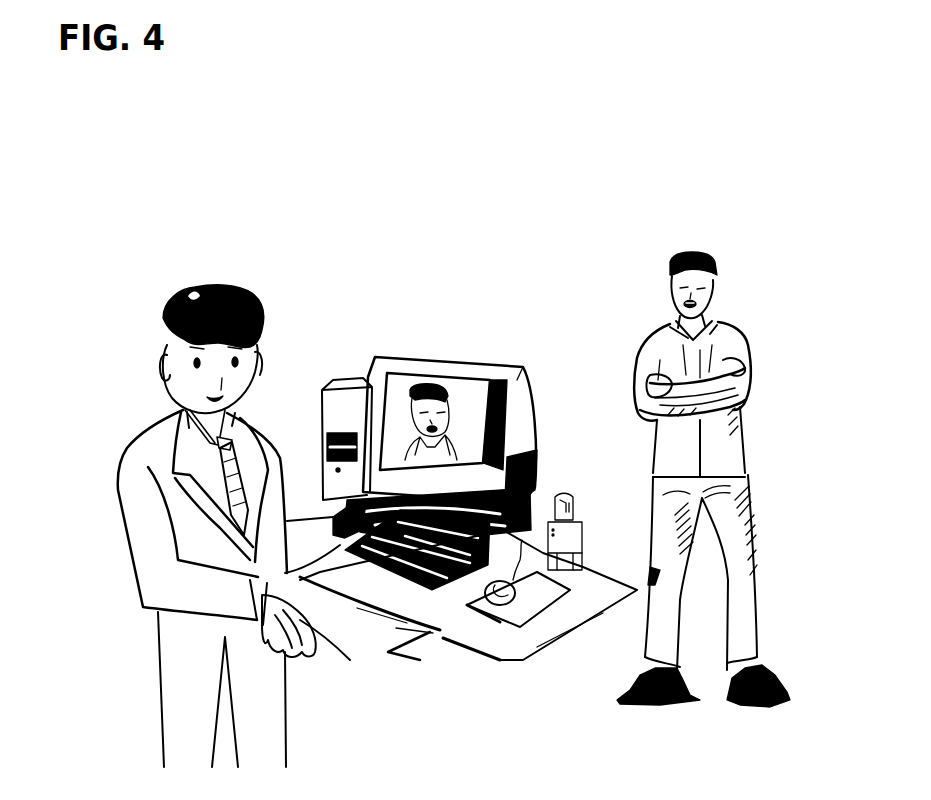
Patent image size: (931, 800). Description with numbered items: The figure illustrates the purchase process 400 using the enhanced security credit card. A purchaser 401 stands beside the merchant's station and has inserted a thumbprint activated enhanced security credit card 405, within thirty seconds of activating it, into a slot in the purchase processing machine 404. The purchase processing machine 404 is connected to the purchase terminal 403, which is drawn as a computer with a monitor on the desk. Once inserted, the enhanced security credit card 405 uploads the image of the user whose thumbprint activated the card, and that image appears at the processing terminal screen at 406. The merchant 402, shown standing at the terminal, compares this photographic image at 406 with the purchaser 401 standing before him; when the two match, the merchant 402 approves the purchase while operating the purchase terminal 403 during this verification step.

The purchase process 400 is at (471, 243).
The purchaser 401 is at (728, 320).
The first user 402 is at (227, 410).
The purchase terminal 403 is at (390, 397).
The purchase processing machine 404 is at (573, 507).
The thumbprint activated enhanced security credit card 405 is at (580, 533).
The processing terminal screen image 406 is at (447, 430).